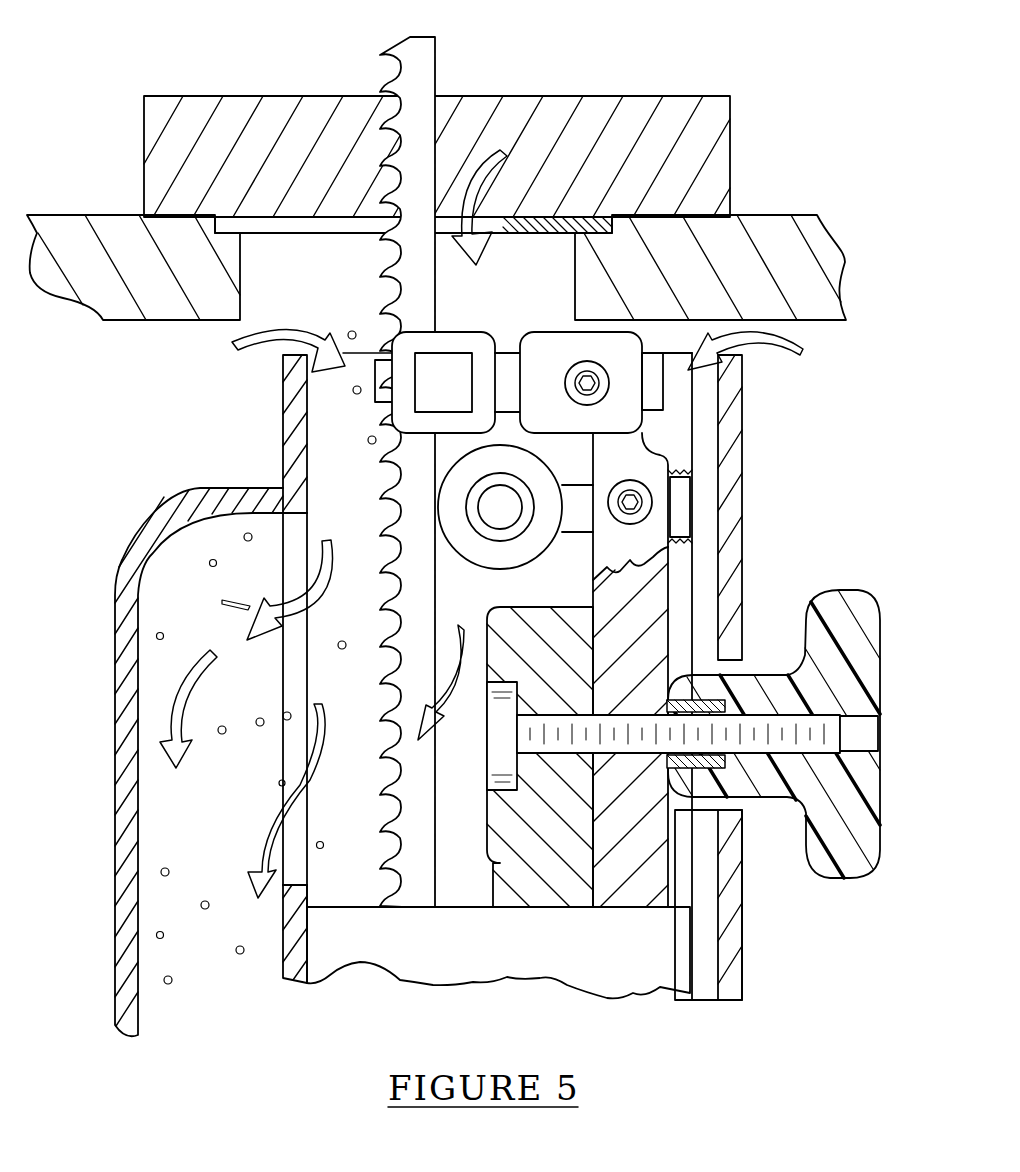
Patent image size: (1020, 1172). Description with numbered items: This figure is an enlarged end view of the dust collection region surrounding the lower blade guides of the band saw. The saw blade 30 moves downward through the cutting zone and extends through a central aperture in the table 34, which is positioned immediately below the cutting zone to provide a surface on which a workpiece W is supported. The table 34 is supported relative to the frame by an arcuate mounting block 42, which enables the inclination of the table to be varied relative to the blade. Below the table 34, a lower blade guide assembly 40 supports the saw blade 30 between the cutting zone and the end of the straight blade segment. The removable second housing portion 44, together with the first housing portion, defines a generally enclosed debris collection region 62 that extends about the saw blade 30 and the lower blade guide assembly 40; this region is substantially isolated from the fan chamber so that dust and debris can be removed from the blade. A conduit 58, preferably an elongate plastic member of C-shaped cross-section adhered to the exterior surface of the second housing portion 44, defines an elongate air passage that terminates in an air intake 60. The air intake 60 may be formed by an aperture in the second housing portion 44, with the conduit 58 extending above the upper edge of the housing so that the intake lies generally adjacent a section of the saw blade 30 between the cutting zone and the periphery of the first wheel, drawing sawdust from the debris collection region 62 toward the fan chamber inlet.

The saw blade 30 is at (437, 80).
The table 34 is at (767, 216).
The workpiece W is at (643, 95).
The lower blade guide assembly 40 is at (640, 443).
The arcuate mounting block 42 is at (487, 830).
The second housing portion 44 is at (283, 378).
The conduit 58 is at (113, 632).
The air intake 60 is at (293, 573).
The debris collection region 62 is at (340, 715).